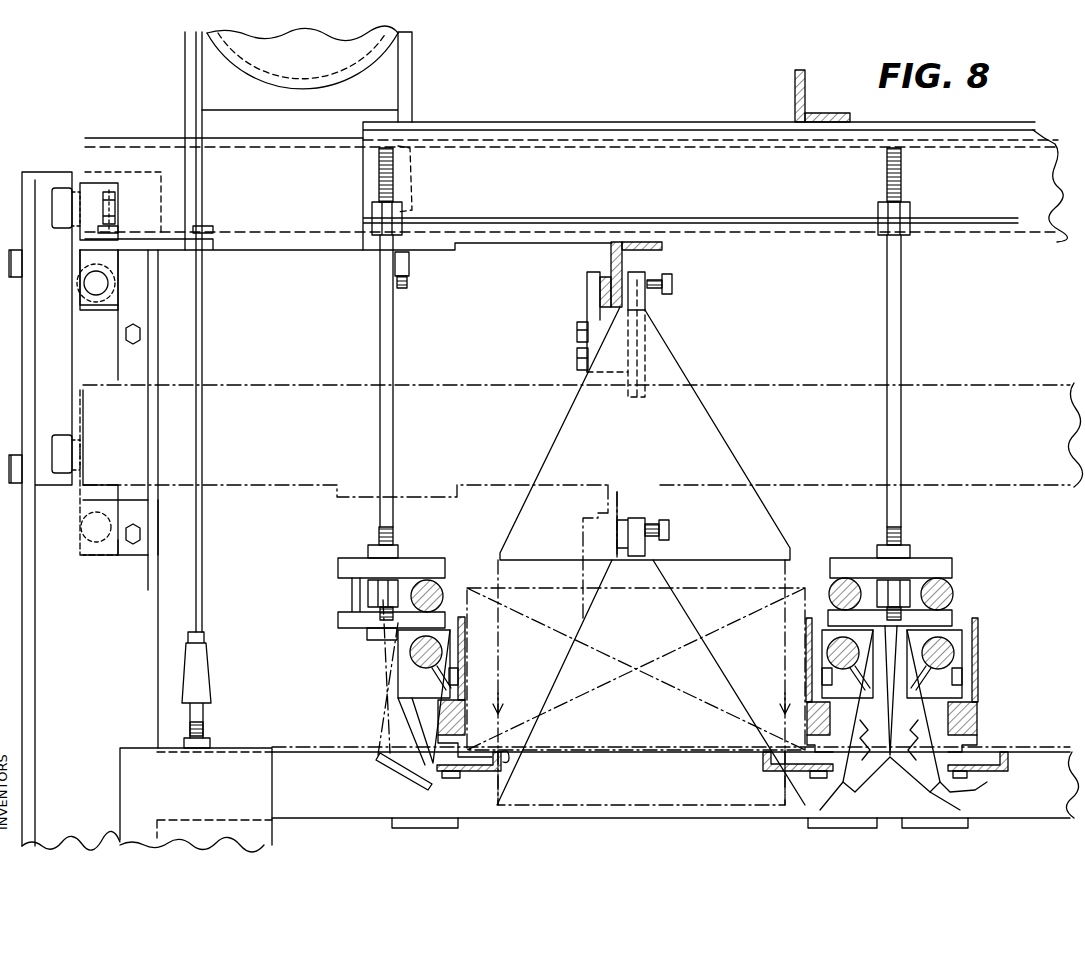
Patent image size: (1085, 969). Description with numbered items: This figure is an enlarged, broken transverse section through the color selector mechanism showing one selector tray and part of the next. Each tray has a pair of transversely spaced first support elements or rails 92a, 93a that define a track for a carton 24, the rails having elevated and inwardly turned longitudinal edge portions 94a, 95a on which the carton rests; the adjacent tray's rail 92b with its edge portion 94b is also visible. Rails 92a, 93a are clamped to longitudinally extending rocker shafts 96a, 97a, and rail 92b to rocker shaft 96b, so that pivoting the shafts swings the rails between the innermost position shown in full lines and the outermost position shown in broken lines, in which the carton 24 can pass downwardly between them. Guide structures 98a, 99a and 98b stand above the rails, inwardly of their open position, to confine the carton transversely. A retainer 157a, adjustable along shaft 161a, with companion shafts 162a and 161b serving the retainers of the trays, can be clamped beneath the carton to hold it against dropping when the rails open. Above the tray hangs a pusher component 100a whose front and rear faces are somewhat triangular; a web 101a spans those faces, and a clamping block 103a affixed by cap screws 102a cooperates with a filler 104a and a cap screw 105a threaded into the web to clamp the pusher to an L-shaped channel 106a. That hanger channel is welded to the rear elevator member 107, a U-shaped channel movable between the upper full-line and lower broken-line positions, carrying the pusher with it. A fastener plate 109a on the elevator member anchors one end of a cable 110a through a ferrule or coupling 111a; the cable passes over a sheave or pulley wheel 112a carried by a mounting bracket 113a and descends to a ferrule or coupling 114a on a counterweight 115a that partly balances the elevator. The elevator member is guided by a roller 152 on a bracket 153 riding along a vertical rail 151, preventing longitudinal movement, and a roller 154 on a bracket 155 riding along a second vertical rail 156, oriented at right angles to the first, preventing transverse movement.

The carton 24 is at (660, 724).
The first support element or rail 92a is at (432, 798).
The first support element or rail 92b is at (974, 778).
The first support element or rail 93a is at (812, 802).
The elevated and inwardly turned longitudinal edge portion 94a is at (505, 762).
The elevated and inwardly turned longitudinal edge portion 94b is at (1004, 752).
The elevated and inwardly turned longitudinal edge portion 95a is at (764, 758).
The rocker shaft 96a is at (420, 652).
The rocker shaft 96b is at (946, 648).
The rocker shaft 97a is at (838, 652).
The guide structure 98a is at (466, 660).
The guide structure 98b is at (977, 654).
The guide structure 99a is at (806, 634).
The pusher component 100a is at (722, 436).
The web 101a is at (644, 356).
The cap screws 102a is at (578, 360).
The clamping block 103a is at (587, 312).
The filler 104a is at (598, 284).
The cap screw 105a is at (672, 284).
The L-shaped channel 106a is at (616, 244).
The rear elevator member 107 is at (816, 236).
The fastener plate 109a is at (355, 246).
The cable 110a is at (412, 88).
The ferrule or coupling 111a is at (410, 180).
The sheave or pulley wheel 112a is at (249, 58).
The mounting bracket 113a is at (191, 86).
The ferrule or coupling 114a is at (203, 664).
The counterweight 115a is at (265, 789).
The rail 151 is at (46, 350).
The roller 152 is at (52, 214).
The bracket 153 is at (96, 190).
The roller 154 is at (72, 284).
The bracket 155 is at (111, 308).
The rail 156 is at (120, 357).
The second support element or retainer 157a is at (482, 746).
The shaft 161a is at (428, 590).
The shaft 161b is at (937, 592).
The shaft 162a is at (845, 590).